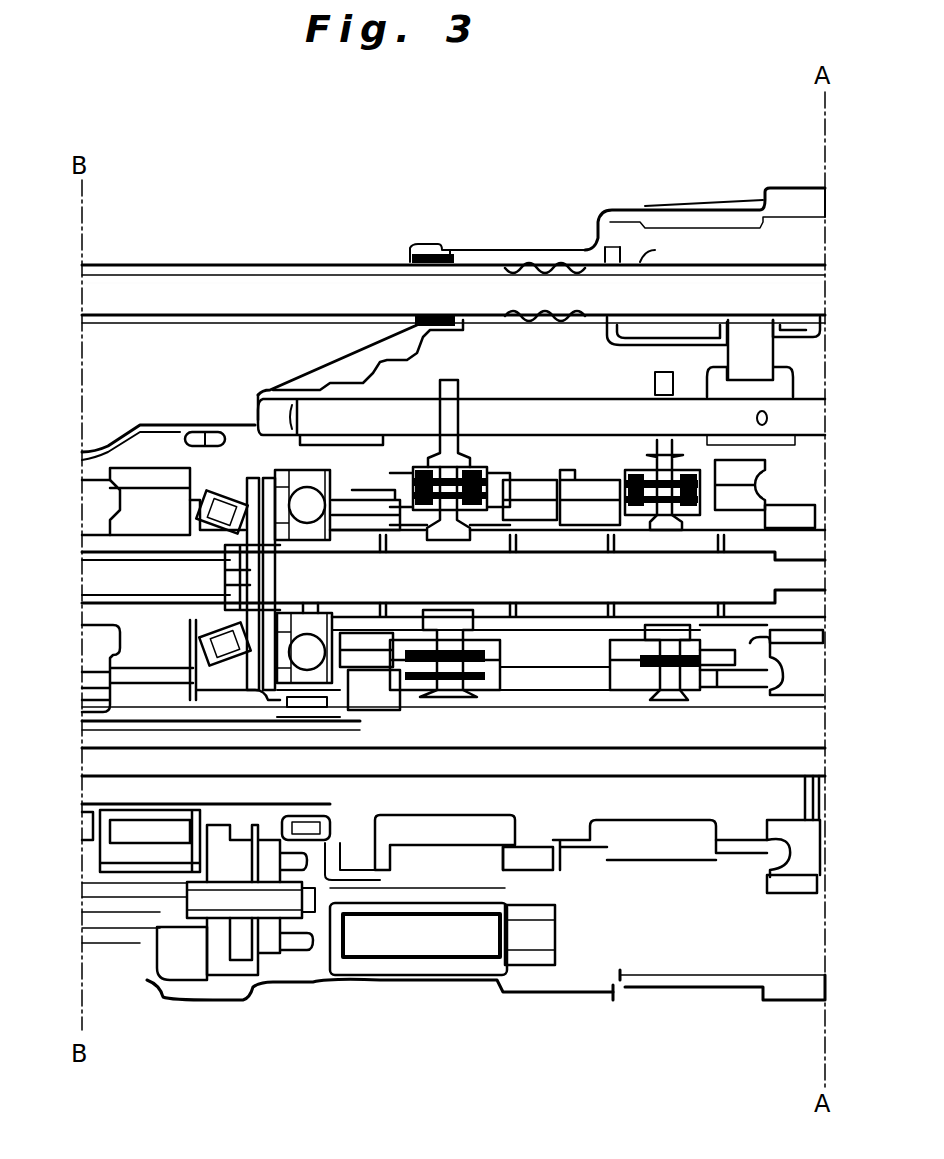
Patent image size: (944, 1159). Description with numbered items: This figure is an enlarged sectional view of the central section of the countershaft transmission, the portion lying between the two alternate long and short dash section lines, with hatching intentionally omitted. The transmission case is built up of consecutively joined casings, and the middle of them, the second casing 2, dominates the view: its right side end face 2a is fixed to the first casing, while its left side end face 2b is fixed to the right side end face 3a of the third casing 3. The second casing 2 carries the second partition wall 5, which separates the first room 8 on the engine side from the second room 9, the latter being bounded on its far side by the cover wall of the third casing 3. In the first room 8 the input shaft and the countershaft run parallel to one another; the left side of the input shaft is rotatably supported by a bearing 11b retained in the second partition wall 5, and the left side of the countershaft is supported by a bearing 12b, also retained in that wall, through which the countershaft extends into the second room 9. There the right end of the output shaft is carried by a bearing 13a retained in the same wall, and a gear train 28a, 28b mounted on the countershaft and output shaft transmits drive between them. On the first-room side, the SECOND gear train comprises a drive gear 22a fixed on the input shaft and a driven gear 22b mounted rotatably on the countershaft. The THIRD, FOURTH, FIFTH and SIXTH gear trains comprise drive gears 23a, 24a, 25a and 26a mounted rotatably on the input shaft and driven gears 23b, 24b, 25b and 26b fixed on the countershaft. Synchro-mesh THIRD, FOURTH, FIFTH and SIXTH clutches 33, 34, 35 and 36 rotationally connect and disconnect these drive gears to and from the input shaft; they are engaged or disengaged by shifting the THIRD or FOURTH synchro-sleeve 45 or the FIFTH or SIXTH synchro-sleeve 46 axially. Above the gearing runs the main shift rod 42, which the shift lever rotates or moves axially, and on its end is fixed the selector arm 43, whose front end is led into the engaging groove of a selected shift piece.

The second casing 2 is at (480, 250).
The right side end face of the second casing 2a is at (825, 203).
The left side end face of the second casing 2b is at (197, 440).
The third casing 3 is at (100, 445).
The right side end face of the third casing 3a is at (207, 990).
The second partition wall 5 is at (270, 445).
The first room 8 is at (496, 931).
The second room 9 is at (95, 483).
The bearing 11b is at (310, 500).
The bearing 12b is at (315, 830).
The bearing 13a is at (215, 520).
The SECOND drive gear 22a is at (805, 510).
The SECOND driven gear 22b is at (795, 890).
The THIRD drive gear 23a is at (368, 505).
The THIRD driven gear 23b is at (395, 877).
The FOURTH drive gear 24a is at (524, 495).
The FOURTH driven gear 24b is at (540, 862).
The FIFTH drive gear 25a is at (572, 490).
The FIFTH driven gear 25b is at (607, 853).
The SIXTH drive gear 26a is at (745, 470).
The SIXTH driven gear 26b is at (740, 845).
The gear of the gear train 28a is at (136, 847).
The gear of the gear train 28b is at (148, 440).
The THIRD clutch 33 is at (405, 690).
The FOURTH clutch 34 is at (470, 697).
The FIFTH clutch 35 is at (620, 675).
The SIXTH clutch 36 is at (712, 690).
The main shift rod 42 is at (280, 283).
The selector arm 43 is at (760, 357).
The THIRD or FOURTH synchro-sleeve 45 is at (428, 690).
The FIFTH or SIXTH synchro-sleeve 46 is at (650, 690).